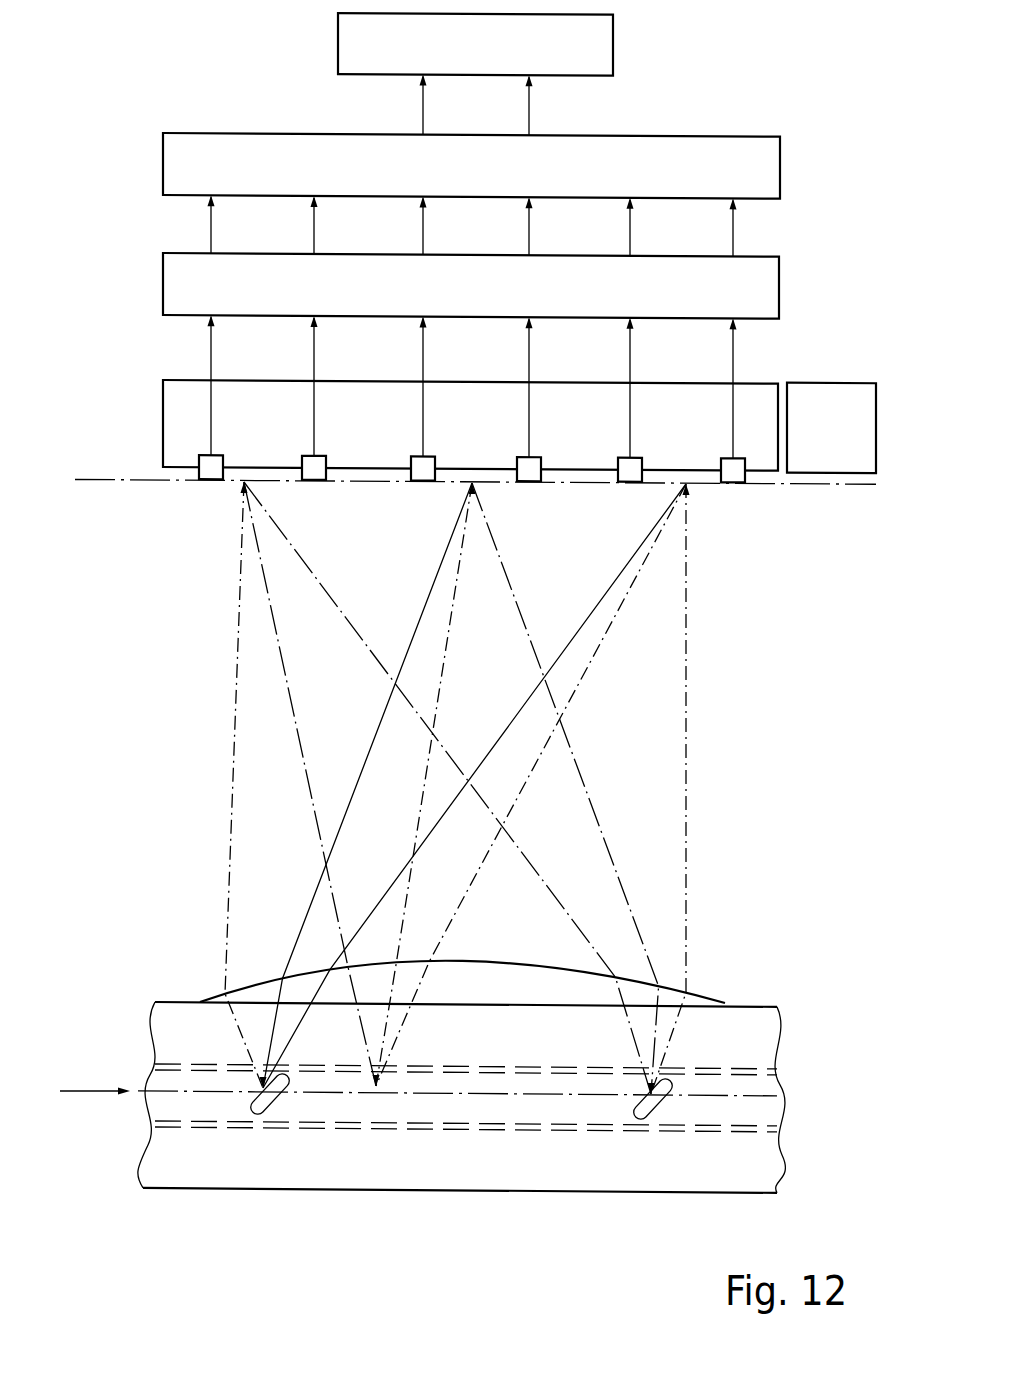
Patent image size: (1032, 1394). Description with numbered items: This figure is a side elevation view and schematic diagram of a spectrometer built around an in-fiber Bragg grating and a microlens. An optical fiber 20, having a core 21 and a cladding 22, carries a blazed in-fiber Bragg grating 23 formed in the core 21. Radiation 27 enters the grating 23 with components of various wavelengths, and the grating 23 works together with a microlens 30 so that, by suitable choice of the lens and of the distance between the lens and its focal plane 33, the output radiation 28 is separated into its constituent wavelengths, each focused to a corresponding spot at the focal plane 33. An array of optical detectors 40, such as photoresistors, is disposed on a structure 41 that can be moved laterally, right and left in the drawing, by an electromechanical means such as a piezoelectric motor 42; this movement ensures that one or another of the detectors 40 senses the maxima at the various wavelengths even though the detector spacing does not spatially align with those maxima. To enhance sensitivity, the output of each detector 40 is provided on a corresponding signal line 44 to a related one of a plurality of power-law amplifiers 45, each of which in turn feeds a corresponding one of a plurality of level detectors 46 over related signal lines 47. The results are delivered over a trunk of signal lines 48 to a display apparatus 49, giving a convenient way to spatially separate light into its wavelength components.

The display apparatus 49 is at (613, 50).
The trunk of signal lines 48 is at (423, 107).
The level detectors 46 is at (780, 172).
The signal lines 47 is at (314, 229).
The power-law amplifiers 45 is at (757, 295).
The signal line 44 is at (423, 353).
The structure 41 is at (752, 400).
The optical detectors 40 is at (214, 455).
The piezoelectric motor 42 is at (852, 436).
The focal plane 33 is at (97, 480).
The output radiation 28 is at (512, 583).
The microlens 30 is at (720, 1005).
The optical fiber 20 is at (480, 1193).
The core 21 is at (760, 1112).
The cladding 22 is at (745, 1167).
The in-fiber Bragg grating 23 is at (345, 1120).
The radiation 27 is at (98, 1093).